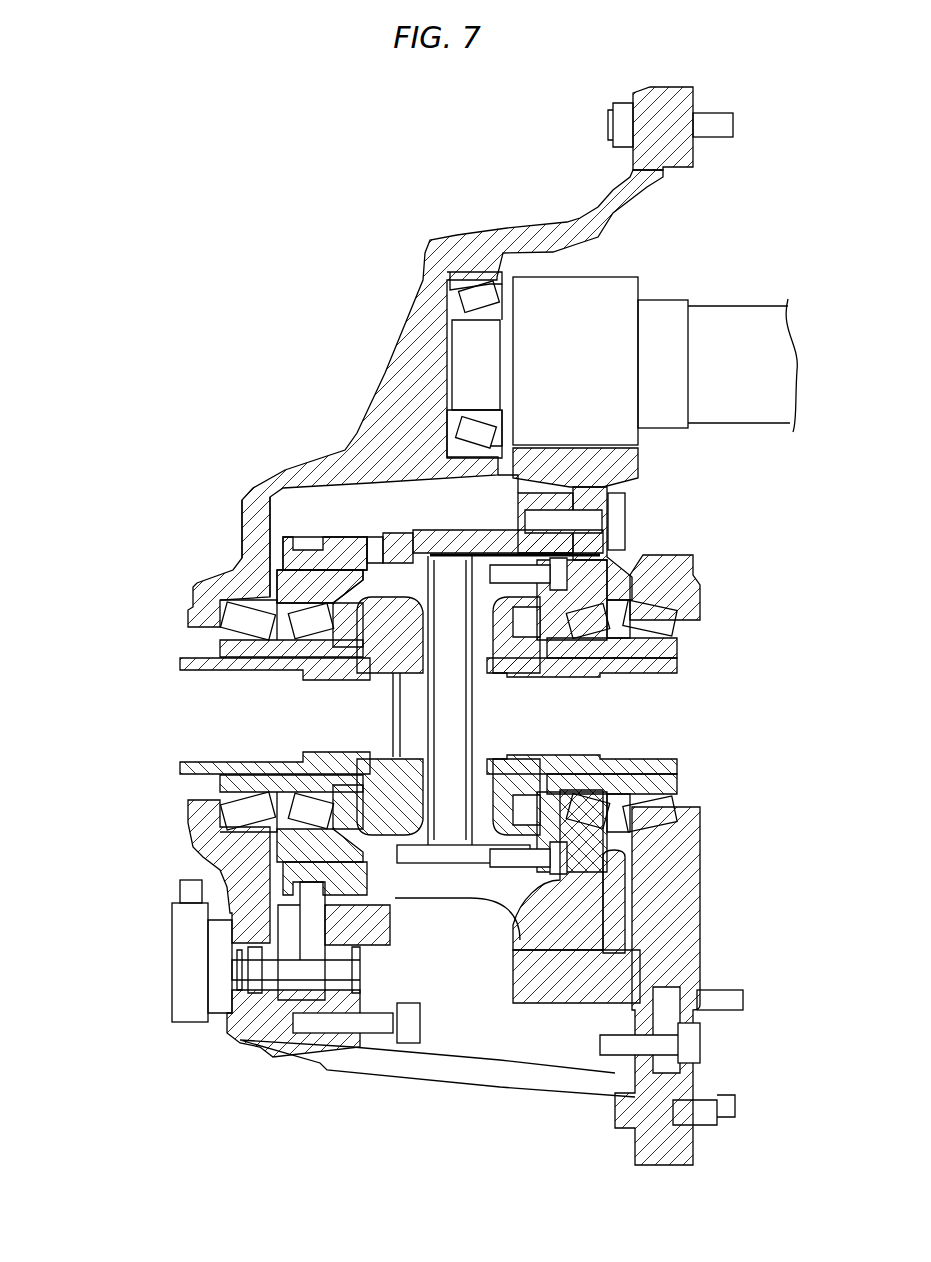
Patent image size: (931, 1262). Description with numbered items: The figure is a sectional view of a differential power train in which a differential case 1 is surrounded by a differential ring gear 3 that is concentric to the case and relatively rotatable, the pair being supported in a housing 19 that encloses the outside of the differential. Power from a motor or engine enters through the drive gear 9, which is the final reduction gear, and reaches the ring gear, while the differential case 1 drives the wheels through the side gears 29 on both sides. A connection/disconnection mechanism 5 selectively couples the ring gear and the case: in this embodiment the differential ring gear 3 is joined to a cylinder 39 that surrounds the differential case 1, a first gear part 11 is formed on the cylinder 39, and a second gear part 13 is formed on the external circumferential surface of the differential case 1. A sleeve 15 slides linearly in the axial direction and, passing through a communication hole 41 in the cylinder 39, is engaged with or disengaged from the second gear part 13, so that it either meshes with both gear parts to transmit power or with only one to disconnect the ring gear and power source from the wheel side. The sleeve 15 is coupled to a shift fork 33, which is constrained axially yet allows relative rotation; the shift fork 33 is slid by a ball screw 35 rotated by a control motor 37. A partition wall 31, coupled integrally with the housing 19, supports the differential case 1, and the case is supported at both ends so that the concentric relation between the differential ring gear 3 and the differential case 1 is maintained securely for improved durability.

The differential case 1 is at (347, 617).
The differential ring gear 3 is at (623, 463).
The connection/disconnection mechanism 5 is at (122, 412).
The drive gear 9 is at (623, 287).
The first gear part 11 is at (313, 517).
The second gear part 13 is at (380, 532).
The sleeve 15 is at (313, 570).
The housing 19 is at (480, 247).
The side gears 29 is at (365, 648).
The partition wall 31 is at (683, 885).
The shift fork 33 is at (310, 885).
The ball screw 35 is at (338, 975).
The control motor 37 is at (193, 968).
The cylinder 39 is at (477, 537).
The communication hole 41 is at (410, 540).